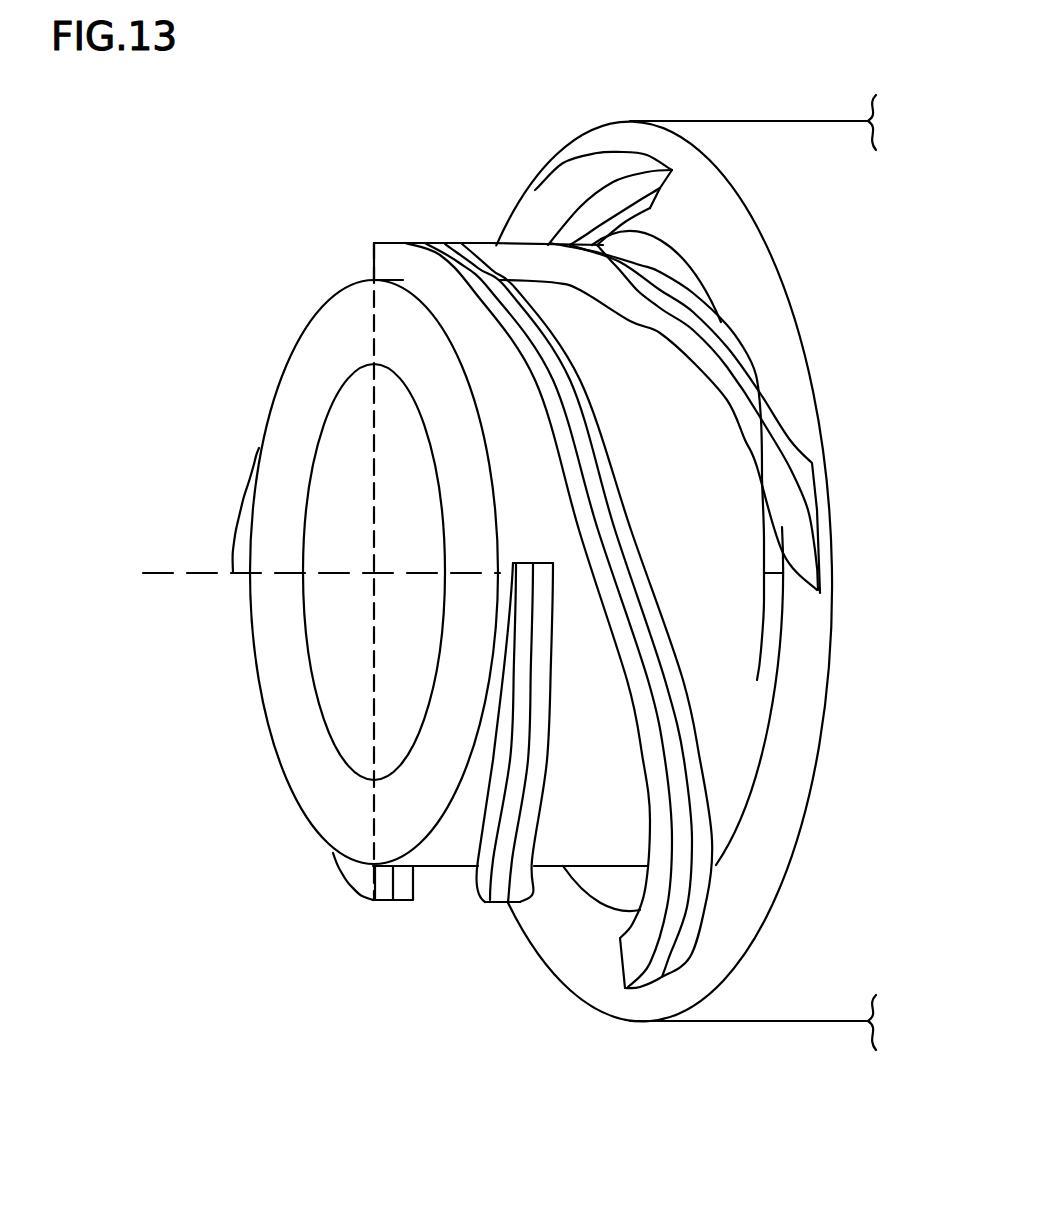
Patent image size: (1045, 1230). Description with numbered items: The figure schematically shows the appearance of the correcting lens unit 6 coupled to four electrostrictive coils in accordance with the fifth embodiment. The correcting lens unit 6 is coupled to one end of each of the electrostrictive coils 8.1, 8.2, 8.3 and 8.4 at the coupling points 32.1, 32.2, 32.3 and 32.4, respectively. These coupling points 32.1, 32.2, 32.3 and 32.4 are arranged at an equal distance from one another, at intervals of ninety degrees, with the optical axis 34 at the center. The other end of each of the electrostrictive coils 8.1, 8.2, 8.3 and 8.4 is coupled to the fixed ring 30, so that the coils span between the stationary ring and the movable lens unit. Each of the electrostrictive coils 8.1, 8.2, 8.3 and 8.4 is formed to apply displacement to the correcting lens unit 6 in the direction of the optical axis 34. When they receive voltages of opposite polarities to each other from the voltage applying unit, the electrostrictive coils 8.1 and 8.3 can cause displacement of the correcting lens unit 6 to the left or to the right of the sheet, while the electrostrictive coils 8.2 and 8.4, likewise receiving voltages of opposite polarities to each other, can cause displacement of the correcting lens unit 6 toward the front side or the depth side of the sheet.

The fixed ring 30 is at (757, 284).
The correcting lens unit 6 is at (452, 843).
The optical axis 34 is at (184, 572).
The coupling point 32.1 is at (373, 281).
The coupling point 32.2 is at (248, 576).
The coupling point 32.3 is at (395, 868).
The coupling point 32.4 is at (500, 572).
The electrostrictive coil 8.1 is at (697, 900).
The electrostrictive coil 8.2 is at (765, 385).
The electrostrictive coil 8.3 is at (517, 232).
The electrostrictive coil 8.4 is at (533, 815).